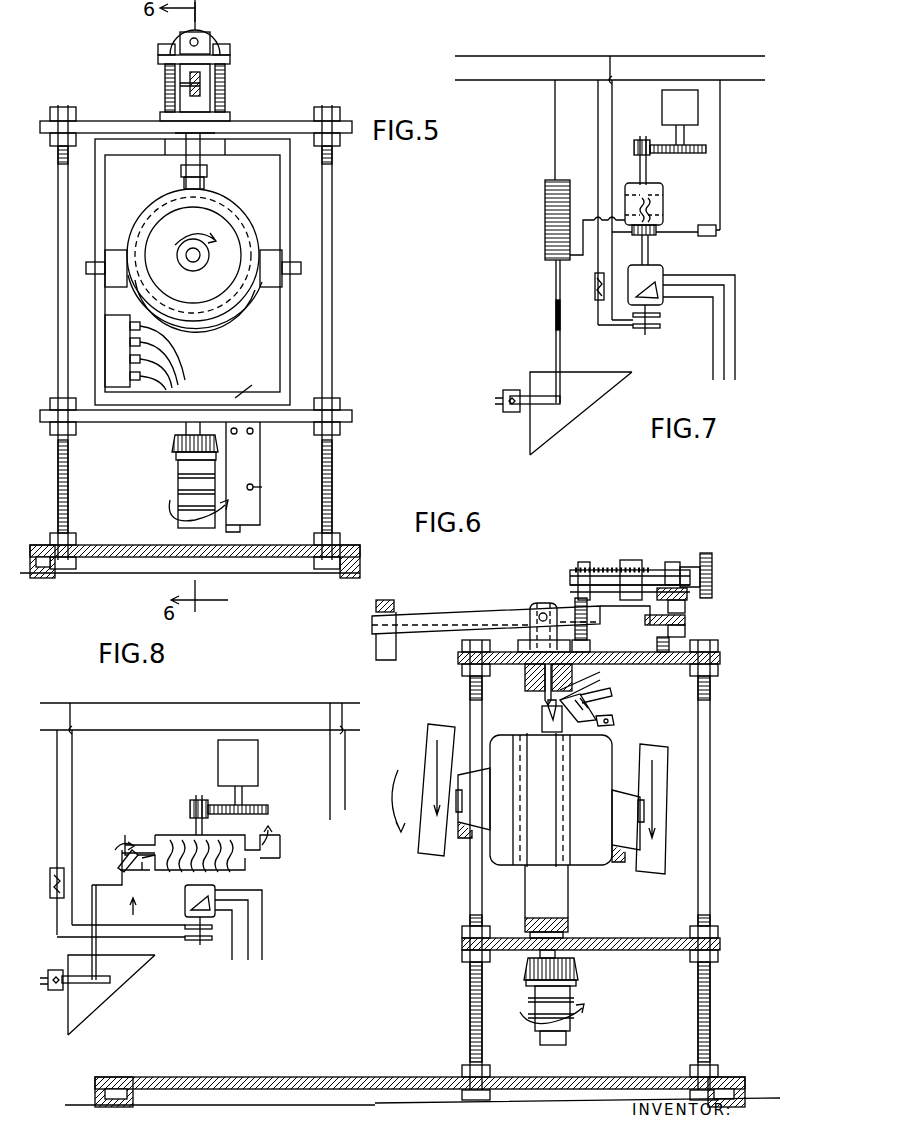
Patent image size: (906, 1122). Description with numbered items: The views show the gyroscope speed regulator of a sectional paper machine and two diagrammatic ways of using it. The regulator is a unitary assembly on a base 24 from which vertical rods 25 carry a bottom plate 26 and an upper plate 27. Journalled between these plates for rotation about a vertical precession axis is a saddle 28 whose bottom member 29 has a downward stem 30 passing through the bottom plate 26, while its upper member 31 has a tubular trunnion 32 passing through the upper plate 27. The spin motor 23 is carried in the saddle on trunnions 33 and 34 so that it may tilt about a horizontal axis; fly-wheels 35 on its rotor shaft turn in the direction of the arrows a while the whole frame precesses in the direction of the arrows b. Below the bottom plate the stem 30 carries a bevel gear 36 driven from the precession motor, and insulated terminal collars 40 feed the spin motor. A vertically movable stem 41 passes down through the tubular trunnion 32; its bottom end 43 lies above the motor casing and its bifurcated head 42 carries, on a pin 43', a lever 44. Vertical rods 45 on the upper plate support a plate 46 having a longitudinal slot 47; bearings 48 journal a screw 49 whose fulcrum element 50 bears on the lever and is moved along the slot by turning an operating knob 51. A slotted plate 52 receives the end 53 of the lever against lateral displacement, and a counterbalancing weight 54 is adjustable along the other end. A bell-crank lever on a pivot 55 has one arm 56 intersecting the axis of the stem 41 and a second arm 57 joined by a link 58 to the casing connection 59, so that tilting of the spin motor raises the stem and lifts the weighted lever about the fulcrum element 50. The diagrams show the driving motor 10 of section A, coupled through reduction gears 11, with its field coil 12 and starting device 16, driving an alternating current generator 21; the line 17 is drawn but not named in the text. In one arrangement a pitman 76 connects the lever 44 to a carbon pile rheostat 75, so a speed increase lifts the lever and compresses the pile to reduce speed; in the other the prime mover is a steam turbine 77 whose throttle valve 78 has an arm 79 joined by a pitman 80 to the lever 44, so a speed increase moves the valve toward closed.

In FIG. 7, the direct current adjustable speed motor 10 is at (660, 187).
In FIG. 7, the reduction gears 11 is at (660, 140).
In FIG. 8, the reduction gears 11 is at (218, 800).
In FIG. 7, the field coil 12 is at (652, 203).
In FIG. 7, the starting device 16 is at (702, 236).
In FIG. 7, the supply line 17 is at (688, 52).
In FIG. 8, the supply line 17 is at (277, 700).
In FIG. 7, the alternating current generator 21 is at (658, 270).
In FIG. 8, the alternating current generator 21 is at (210, 888).
In FIG. 5, the spin motor 23 is at (196, 330).
In FIG. 6, the spin motor 23 is at (492, 840).
In FIG. 5, the base 24 is at (120, 570).
In FIG. 6, the base 24 is at (253, 1077).
In FIG. 5, the vertical rods 25 is at (56, 240).
In FIG. 6, the vertical rods 25 is at (475, 910).
In FIG. 5, the bottom plate 26 is at (100, 422).
In FIG. 6, the bottom plate 26 is at (640, 950).
In FIG. 5, the upper plate 27 is at (275, 125).
In FIG. 7, the upper plate 27 is at (688, 78).
In FIG. 8, the upper plate 27 is at (268, 727).
In FIG. 6, the upper plate 27 is at (648, 664).
In FIG. 5, the saddle 28 is at (285, 198).
In FIG. 6, the saddle 28 is at (570, 905).
In FIG. 5, the bottom member 29 is at (240, 378).
In FIG. 6, the bottom member 29 is at (570, 925).
In FIG. 5, the stem 30 is at (190, 435).
In FIG. 6, the stem 30 is at (555, 952).
In FIG. 5, the upper member 31 is at (238, 148).
In FIG. 6, the upper member 31 is at (545, 680).
In FIG. 5, the tubular trunnion 32 is at (180, 136).
In FIG. 6, the tubular trunnion 32 is at (528, 665).
In FIG. 5, the trunnion 33 is at (86, 268).
In FIG. 5, the trunnion 34 is at (301, 268).
In FIG. 5, the fly-wheels 35 is at (220, 300).
In FIG. 6, the fly-wheels 35 is at (428, 832).
In FIG. 5, the bevel gear 36 is at (236, 455).
In FIG. 6, the bevel gear 36 is at (535, 980).
In FIG. 5, the terminal collars 40 is at (180, 493).
In FIG. 5, the vertically movable stem 41 is at (185, 174).
In FIG. 6, the vertically movable stem 41 is at (560, 692).
In FIG. 5, the bifurcated head 42 is at (200, 105).
In FIG. 6, the bifurcated head 42 is at (520, 622).
In FIG. 6, the bottom end of stem 43 is at (529, 720).
In FIG. 5, the pin 43' is at (228, 78).
In FIG. 6, the pin 43' is at (548, 591).
In FIG. 5, the lever 44 is at (180, 82).
In FIG. 7, the lever 44 is at (548, 402).
In FIG. 8, the lever 44 is at (80, 983).
In FIG. 6, the lever 44 is at (463, 634).
In FIG. 5, the vertical rods 45 is at (225, 88).
In FIG. 6, the vertical rods 45 is at (588, 640).
In FIG. 6, the plate 46 is at (690, 598).
In FIG. 6, the longitudinal slot 47 is at (652, 585).
In FIG. 5, the upstanding bearings 48 is at (208, 40).
In FIG. 6, the upstanding bearings 48 is at (583, 562).
In FIG. 5, the screw 49 is at (190, 38).
In FIG. 6, the screw 49 is at (612, 572).
In FIG. 6, the fulcrum element 50 is at (632, 562).
In FIG. 5, the operating knob 51 is at (210, 40).
In FIG. 6, the operating knob 51 is at (712, 555).
In FIG. 6, the slotted plate 52 is at (685, 620).
In FIG. 6, the end of lever 53 is at (648, 625).
In FIG. 7, the counterbalancing weight 54 is at (512, 412).
In FIG. 8, the counterbalancing weight 54 is at (58, 990).
In FIG. 6, the counterbalancing weight 54 is at (376, 603).
In FIG. 6, the pivot 55 is at (588, 702).
In FIG. 5, the bell-crank arm 56 is at (205, 183).
In FIG. 6, the bell-crank arm 56 is at (580, 700).
In FIG. 6, the bell-crank arm 57 is at (600, 712).
In FIG. 6, the link 58 is at (598, 732).
In FIG. 6, the casing connection 59 is at (550, 732).
In FIG. 7, the carbon pile rheostat 75 is at (545, 208).
In FIG. 7, the pitman 76 is at (550, 306).
In FIG. 8, the steam turbine 77 is at (166, 835).
In FIG. 8, the throttle valve 78 is at (145, 883).
In FIG. 8, the arm 79 is at (104, 883).
In FIG. 8, the pitman 80 is at (110, 907).
In FIG. 7, the section A is at (690, 112).
In FIG. 8, the section A is at (245, 765).
In FIG. 5, the rotation arrows a is at (188, 252).
In FIG. 6, the rotation arrows a is at (432, 760).
In FIG. 5, the precession arrows b is at (172, 510).
In FIG. 6, the precession arrows b is at (528, 1012).